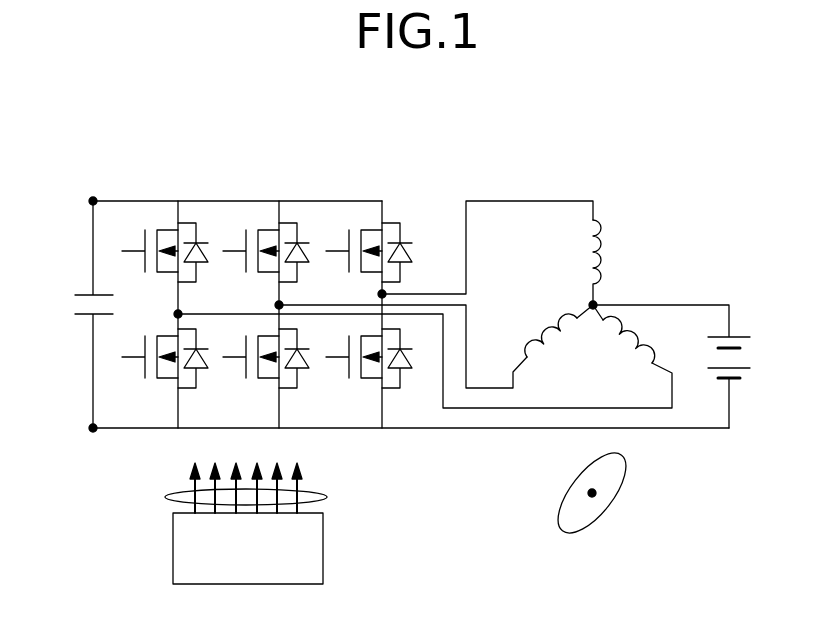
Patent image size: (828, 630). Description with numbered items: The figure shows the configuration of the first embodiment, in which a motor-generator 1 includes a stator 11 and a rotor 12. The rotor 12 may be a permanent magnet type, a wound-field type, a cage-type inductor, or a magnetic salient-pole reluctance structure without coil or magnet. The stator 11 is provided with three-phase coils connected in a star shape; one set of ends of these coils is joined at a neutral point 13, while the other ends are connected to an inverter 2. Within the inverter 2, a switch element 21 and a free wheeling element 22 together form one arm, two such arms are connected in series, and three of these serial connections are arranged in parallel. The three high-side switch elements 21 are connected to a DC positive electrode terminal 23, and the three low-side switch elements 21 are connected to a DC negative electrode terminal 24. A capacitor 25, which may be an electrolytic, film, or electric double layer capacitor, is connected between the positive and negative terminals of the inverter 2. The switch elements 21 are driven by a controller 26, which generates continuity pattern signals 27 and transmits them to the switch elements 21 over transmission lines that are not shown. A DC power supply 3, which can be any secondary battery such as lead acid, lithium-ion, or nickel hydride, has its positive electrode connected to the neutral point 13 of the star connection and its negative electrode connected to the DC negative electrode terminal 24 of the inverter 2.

The motor-generator 1 is at (572, 181).
The inverter 2 is at (286, 249).
The DC power supply 3 is at (741, 336).
The stator 11 is at (620, 215).
The rotor 12 is at (617, 505).
The neutral point 13 is at (597, 301).
The switch element 21 is at (365, 232).
The free wheeling element 22 is at (403, 243).
The DC positive electrode terminal 23 is at (92, 200).
The DC negative electrode terminal 24 is at (92, 437).
The capacitor 25 is at (82, 294).
The controller 26 is at (173, 545).
The continuity pattern signals 27 is at (312, 490).